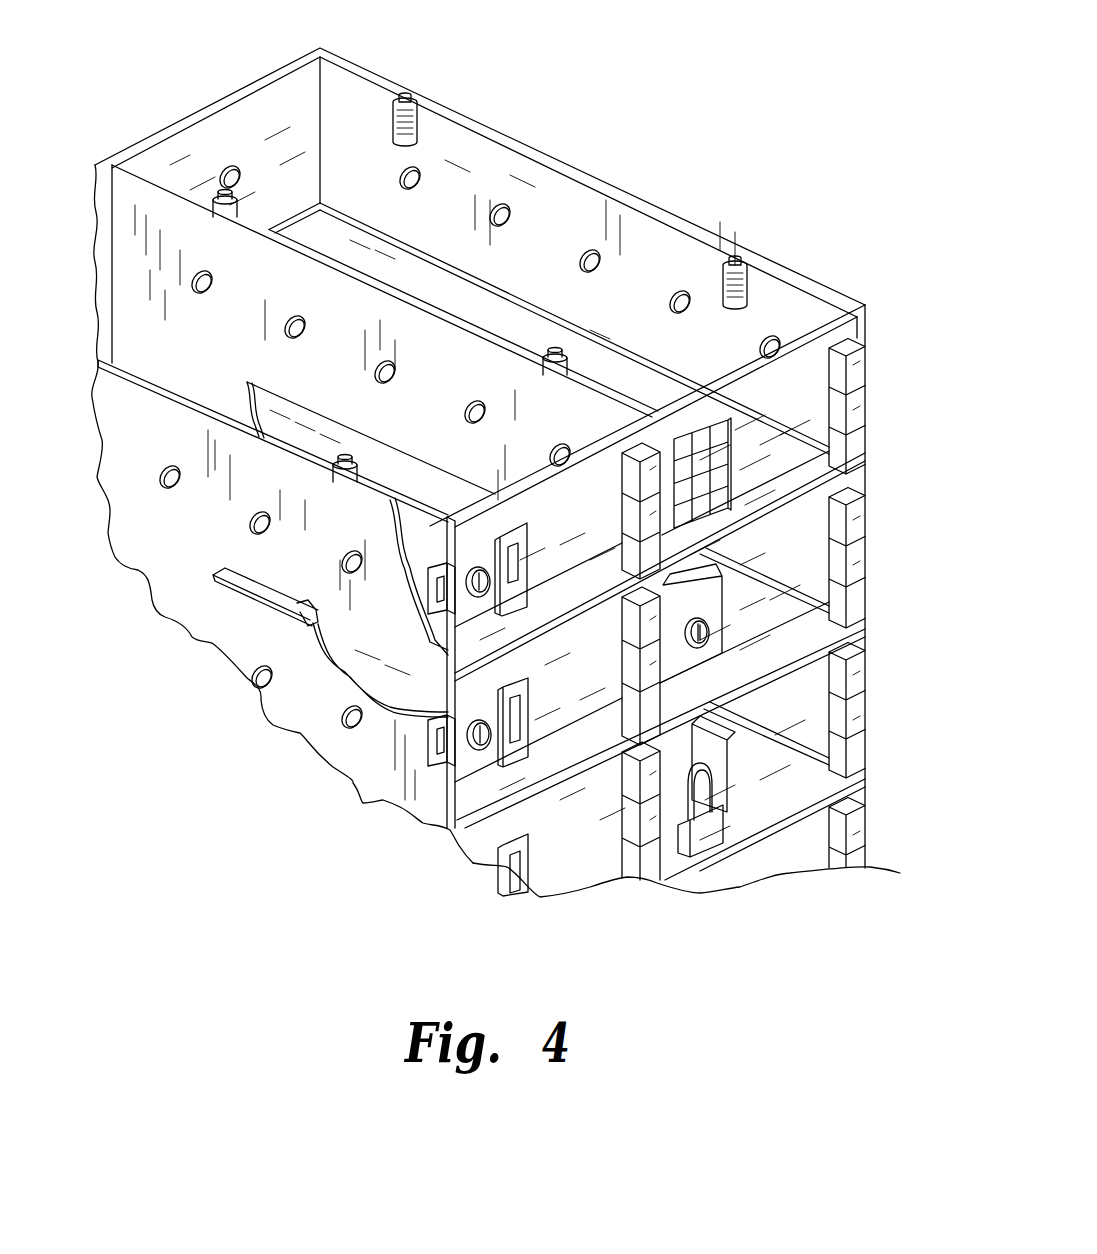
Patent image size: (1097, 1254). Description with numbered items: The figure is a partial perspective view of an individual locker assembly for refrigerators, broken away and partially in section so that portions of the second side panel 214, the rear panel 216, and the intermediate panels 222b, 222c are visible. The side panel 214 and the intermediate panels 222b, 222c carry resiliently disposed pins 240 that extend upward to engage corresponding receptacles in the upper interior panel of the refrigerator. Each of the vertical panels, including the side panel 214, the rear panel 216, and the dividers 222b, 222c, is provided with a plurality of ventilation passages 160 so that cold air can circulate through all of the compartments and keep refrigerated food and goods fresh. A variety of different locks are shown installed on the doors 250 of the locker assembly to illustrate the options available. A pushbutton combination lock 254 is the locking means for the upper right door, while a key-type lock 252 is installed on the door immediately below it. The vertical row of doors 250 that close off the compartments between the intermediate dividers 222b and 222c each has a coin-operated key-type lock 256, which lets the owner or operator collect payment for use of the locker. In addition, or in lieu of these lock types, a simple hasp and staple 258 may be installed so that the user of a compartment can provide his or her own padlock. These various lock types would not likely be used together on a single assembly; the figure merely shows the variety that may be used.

The ventilation passages 160 is at (420, 170).
The second side panel 214 is at (552, 270).
The rear panel 216 is at (308, 140).
The intermediate panel 222b is at (348, 521).
The intermediate panel 222c is at (367, 416).
The resiliently disposed pins 240 is at (215, 188).
The doors 250 is at (587, 512).
The key-type lock 252 is at (712, 620).
The pushbutton combination lock 254 is at (728, 460).
The coin-operated key-type lock 256 is at (530, 558).
The hasp and staple 258 is at (712, 776).